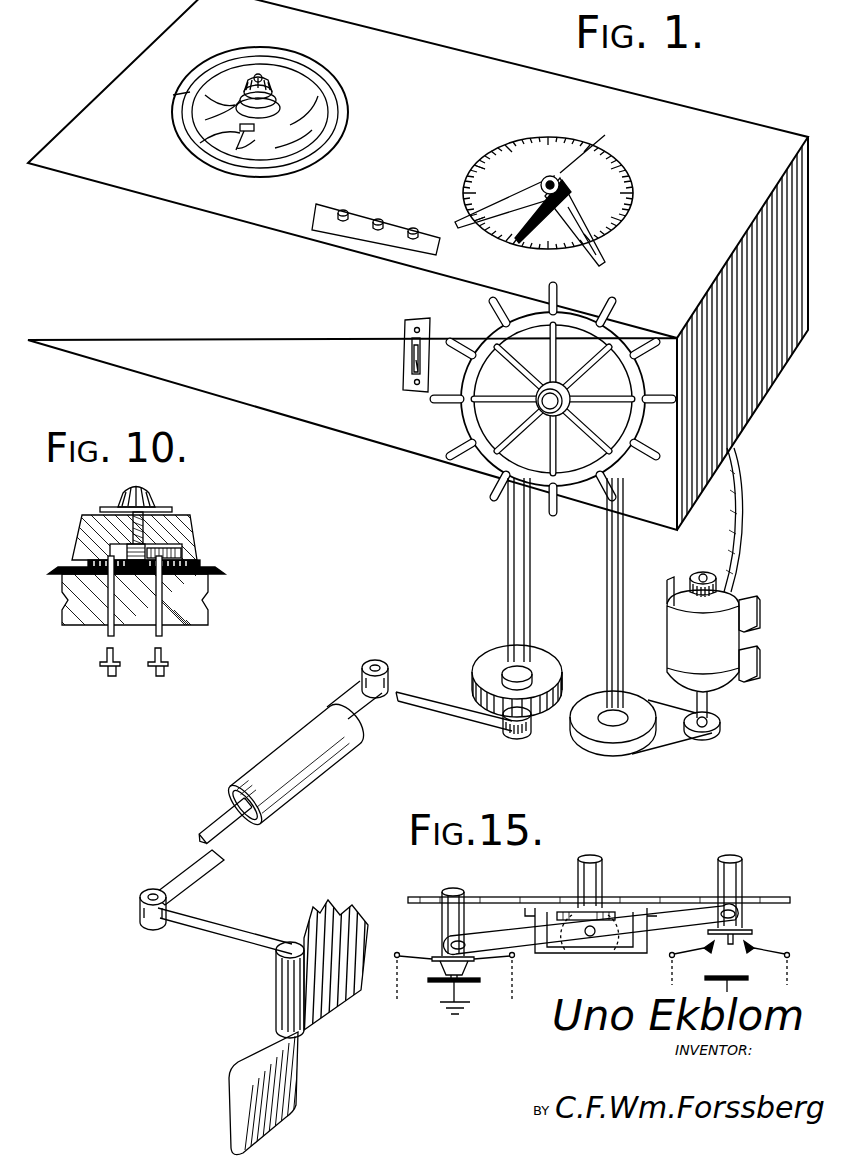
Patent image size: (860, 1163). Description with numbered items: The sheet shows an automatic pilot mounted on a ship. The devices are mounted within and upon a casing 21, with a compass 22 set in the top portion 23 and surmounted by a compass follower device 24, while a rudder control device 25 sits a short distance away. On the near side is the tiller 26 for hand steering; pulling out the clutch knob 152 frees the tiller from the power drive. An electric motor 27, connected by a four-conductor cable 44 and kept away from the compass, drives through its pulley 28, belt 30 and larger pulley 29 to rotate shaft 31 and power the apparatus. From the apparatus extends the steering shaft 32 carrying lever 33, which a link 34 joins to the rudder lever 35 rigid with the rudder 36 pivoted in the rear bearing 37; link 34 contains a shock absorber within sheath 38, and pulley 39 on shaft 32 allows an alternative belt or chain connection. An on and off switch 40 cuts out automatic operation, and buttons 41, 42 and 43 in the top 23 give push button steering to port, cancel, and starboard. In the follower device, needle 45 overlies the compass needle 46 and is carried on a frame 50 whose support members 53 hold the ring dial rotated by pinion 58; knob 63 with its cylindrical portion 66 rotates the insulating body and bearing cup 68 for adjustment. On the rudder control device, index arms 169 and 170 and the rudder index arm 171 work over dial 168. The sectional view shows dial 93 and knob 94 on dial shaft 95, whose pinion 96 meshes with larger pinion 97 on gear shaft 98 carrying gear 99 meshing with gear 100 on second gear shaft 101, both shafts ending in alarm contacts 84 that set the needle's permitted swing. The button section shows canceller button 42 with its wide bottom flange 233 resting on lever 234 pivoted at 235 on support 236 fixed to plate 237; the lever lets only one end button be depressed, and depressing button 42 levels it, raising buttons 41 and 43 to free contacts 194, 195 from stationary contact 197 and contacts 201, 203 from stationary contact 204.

In FIG. 1, the casing 21 is at (705, 106).
In FIG. 1, the compass 22 is at (312, 92).
In FIG. 1, the top portion 23 is at (720, 190).
In FIG. 1, the compass follower device 24 is at (255, 65).
In FIG. 1, the rudder control device 25 is at (582, 135).
In FIG. 1, the tiller 26 is at (488, 455).
In FIG. 1, the electric motor 27 is at (668, 644).
In FIG. 1, the pulley 28 is at (720, 722).
In FIG. 1, the larger pulley 29 is at (596, 703).
In FIG. 1, the belt 30 is at (675, 745).
In FIG. 1, the shaft 31 is at (607, 583).
In FIG. 1, the steering shaft 32 is at (508, 583).
In FIG. 1, the lever 33 is at (446, 730).
In FIG. 1, the link 34 is at (358, 712).
In FIG. 1, the rudder lever 35 is at (228, 940).
In FIG. 1, the rudder 36 is at (298, 1080).
In FIG. 1, the rear bearing 37 is at (340, 924).
In FIG. 1, the sheath 38 is at (300, 782).
In FIG. 1, the pulley 39 is at (478, 658).
In FIG. 1, the on and off switch 40 is at (404, 358).
In FIG. 1, the button 41 is at (343, 210).
In FIG. 15, the button 41 is at (733, 857).
In FIG. 1, the button 42 is at (378, 219).
In FIG. 15, the button 42 is at (592, 856).
In FIG. 1, the button 43 is at (413, 228).
In FIG. 15, the button 43 is at (452, 889).
In FIG. 1, the four-conductor cable 44 is at (740, 530).
In FIG. 1, the needle 45 is at (205, 143).
In FIG. 1, the compass needle 46 is at (246, 134).
In FIG. 1, the frame 50 is at (178, 97).
In FIG. 1, the support members 53 is at (312, 135).
In FIG. 1, the pinion 58 is at (205, 76).
In FIG. 10, the knob 63 is at (82, 530).
In FIG. 10, the cylindrical portion 66 is at (140, 625).
In FIG. 1, the metal bearing cup 68 is at (240, 127).
In FIG. 10, the alarm contacts 84 is at (110, 676).
In FIG. 10, the dial 93 is at (114, 508).
In FIG. 10, the knob 94 is at (150, 492).
In FIG. 10, the dial shaft 95 is at (110, 528).
In FIG. 10, the pinion 96 is at (127, 552).
In FIG. 10, the larger pinion 97 is at (182, 553).
In FIG. 10, the gear shaft 98 is at (164, 636).
In FIG. 10, the gear 99 is at (200, 563).
In FIG. 10, the gear 100 is at (68, 568).
In FIG. 10, the second gear shaft 101 is at (108, 636).
In FIG. 1, the clutch knob 152 is at (546, 412).
In FIG. 1, the dial 168 is at (604, 149).
In FIG. 1, the index arm 169 is at (458, 230).
In FIG. 1, the second index arm 170 is at (608, 258).
In FIG. 1, the rudder index arm 171 is at (515, 244).
In FIG. 15, the contact 194 is at (440, 965).
In FIG. 15, the contact 195 is at (470, 965).
In FIG. 15, the stationary contact 197 is at (466, 985).
In FIG. 15, the contact 201 is at (710, 956).
In FIG. 15, the contact 203 is at (740, 958).
In FIG. 15, the stationary contact 204 is at (742, 981).
In FIG. 15, the bottom flange 233 is at (620, 908).
In FIG. 15, the lever 234 is at (658, 928).
In FIG. 15, the pivot 235 is at (590, 937).
In FIG. 15, the support 236 is at (535, 920).
In FIG. 15, the plate 237 is at (520, 888).